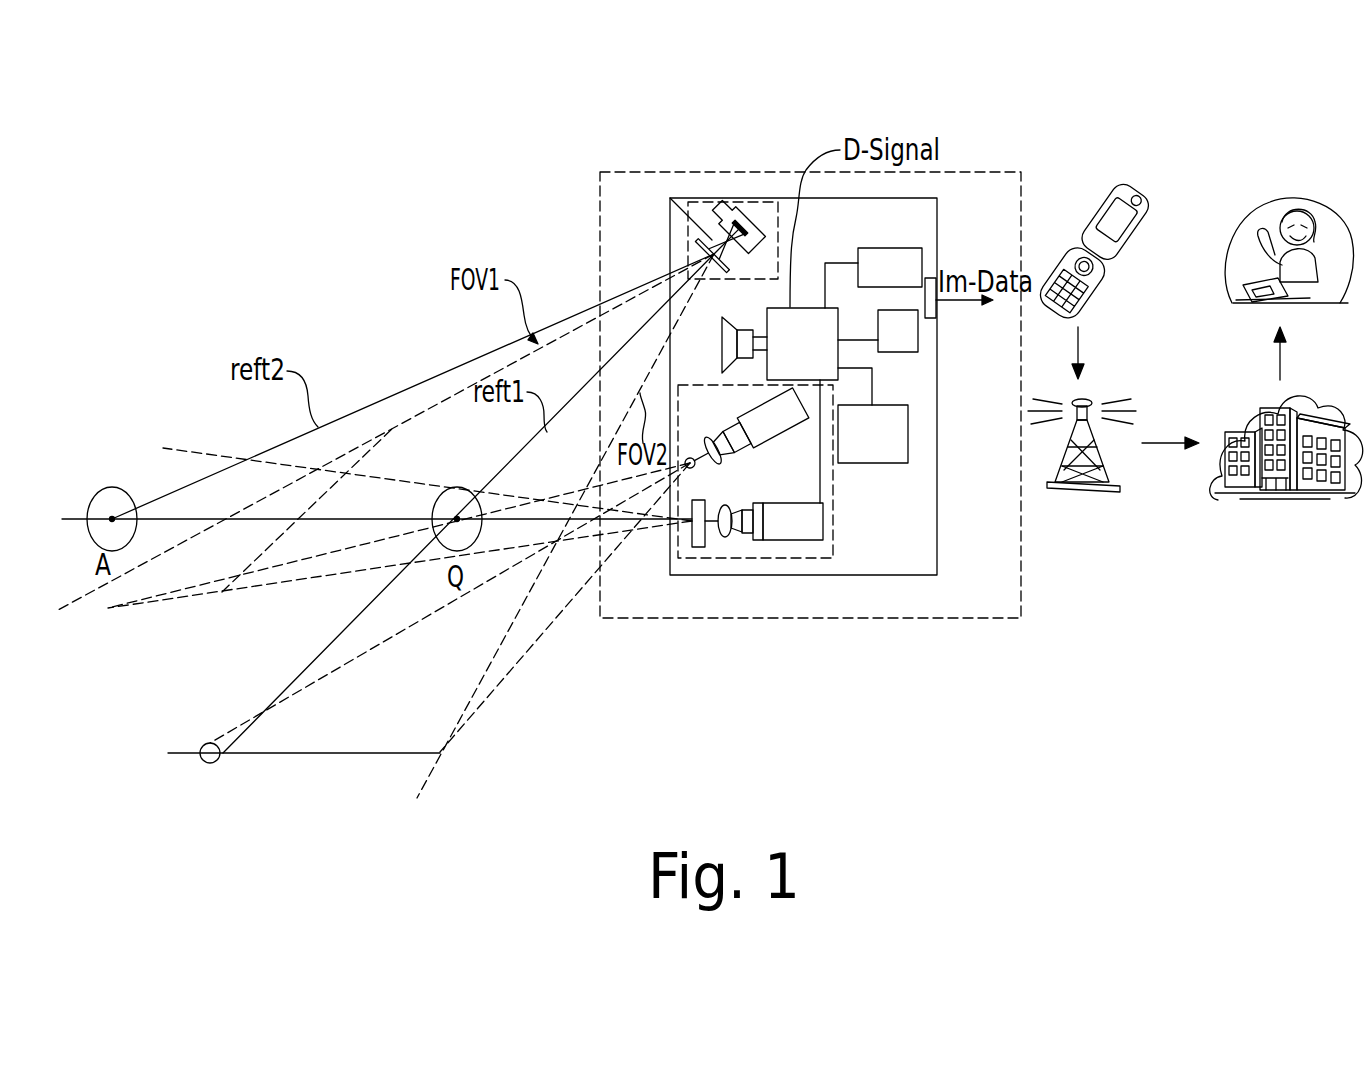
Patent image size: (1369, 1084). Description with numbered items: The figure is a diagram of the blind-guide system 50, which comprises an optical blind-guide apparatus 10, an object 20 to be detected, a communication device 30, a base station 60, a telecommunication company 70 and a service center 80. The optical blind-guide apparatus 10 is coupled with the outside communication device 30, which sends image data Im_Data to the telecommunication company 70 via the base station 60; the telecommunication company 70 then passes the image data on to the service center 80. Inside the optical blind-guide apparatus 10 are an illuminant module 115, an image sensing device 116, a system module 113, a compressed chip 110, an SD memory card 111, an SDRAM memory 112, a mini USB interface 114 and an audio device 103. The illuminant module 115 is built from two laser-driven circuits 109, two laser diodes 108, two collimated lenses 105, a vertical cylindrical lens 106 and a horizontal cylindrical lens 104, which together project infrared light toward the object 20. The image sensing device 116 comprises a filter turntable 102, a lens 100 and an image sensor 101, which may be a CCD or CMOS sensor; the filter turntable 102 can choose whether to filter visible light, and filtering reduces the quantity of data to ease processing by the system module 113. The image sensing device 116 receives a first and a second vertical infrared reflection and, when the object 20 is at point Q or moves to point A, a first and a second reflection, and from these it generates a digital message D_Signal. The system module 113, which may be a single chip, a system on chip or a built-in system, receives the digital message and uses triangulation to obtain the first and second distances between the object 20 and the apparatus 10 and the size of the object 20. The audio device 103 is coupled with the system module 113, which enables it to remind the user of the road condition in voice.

The optical blind-guide apparatus 10 is at (918, 620).
The object 20 is at (112, 487).
The communication device 30 is at (1098, 287).
The blind-guide system 50 is at (1033, 774).
The base station 60 is at (1082, 469).
The telecommunication company 70 is at (1286, 467).
The service center 80 is at (1289, 275).
The lens 100 is at (670, 198).
The image sensor 101 is at (740, 217).
The filter turntable 102 is at (710, 253).
The audio device 103 is at (722, 343).
The horizontal cylindrical lens 104 is at (685, 467).
The collimated lenses 105 is at (697, 548).
The vertical cylindrical lens 106 is at (702, 548).
The laser diodes 108 is at (742, 447).
The laser-driven circuits 109 is at (812, 514).
The compressed chip 110 is at (900, 432).
The SD memory card 111 is at (907, 335).
The SDRAM memory 112 is at (905, 250).
The system module 113 is at (808, 316).
The mini USB interface 114 is at (936, 307).
The illuminant module 115 is at (833, 533).
The image sensing device 116 is at (757, 198).